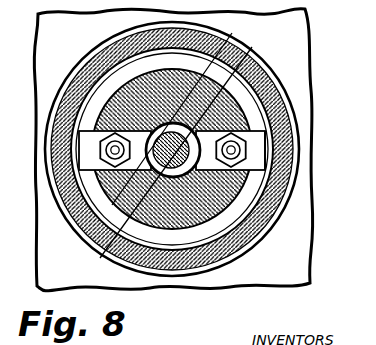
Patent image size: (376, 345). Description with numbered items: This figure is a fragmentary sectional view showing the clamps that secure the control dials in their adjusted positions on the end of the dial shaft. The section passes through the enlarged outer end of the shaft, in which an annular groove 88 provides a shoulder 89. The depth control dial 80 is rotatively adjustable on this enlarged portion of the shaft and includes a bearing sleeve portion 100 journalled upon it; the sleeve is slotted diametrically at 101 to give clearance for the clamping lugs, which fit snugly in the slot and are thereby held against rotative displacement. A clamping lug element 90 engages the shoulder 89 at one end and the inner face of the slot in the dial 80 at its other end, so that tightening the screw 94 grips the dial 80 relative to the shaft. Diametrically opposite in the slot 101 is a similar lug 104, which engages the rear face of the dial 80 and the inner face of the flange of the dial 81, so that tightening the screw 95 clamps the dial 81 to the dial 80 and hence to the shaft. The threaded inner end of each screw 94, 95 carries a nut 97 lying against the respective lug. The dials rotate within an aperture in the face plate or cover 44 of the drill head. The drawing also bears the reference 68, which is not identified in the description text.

The face plate or cover 44 is at (293, 250).
The section line 68 is at (123, 230).
The dial 80 is at (257, 184).
The dial 81 is at (268, 218).
The annular groove 88 is at (100, 258).
The shoulder 89 is at (112, 205).
The clamping lug element 90 is at (55, 181).
The screw 94 is at (100, 163).
The screw 95 is at (262, 156).
The nut 97 is at (114, 151).
The bearing sleeve portion 100 is at (212, 210).
The slot 101 is at (265, 73).
The lug 104 is at (264, 167).